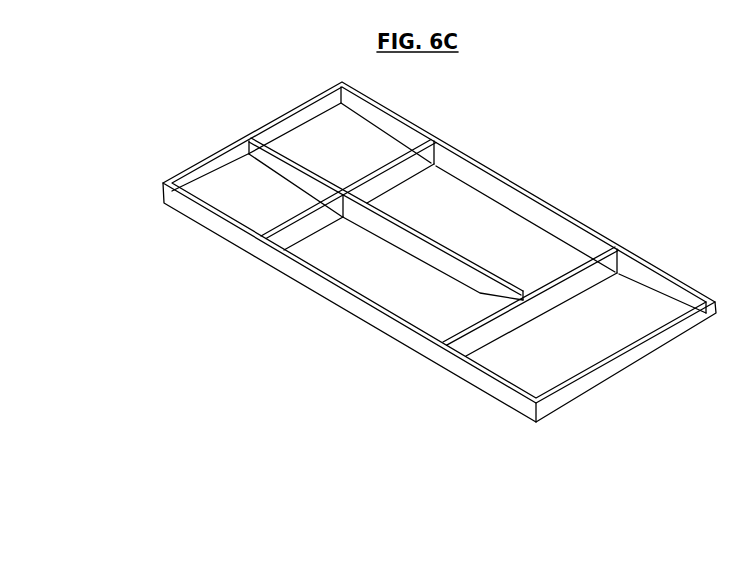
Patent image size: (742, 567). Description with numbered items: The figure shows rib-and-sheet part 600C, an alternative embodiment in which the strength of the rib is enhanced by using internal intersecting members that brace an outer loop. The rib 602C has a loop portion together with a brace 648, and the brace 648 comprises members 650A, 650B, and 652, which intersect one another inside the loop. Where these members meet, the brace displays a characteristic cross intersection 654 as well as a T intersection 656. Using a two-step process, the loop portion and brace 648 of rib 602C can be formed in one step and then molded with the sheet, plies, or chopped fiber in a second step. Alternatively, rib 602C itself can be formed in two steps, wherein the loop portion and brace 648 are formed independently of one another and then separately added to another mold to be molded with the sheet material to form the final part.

The rib-and-sheet part 600C is at (409, 251).
The rib 602C is at (292, 278).
The brace 648 is at (441, 220).
The member 650A is at (277, 224).
The member 650B is at (547, 303).
The member 652 is at (427, 250).
The cross intersection 654 is at (345, 190).
The T intersection 656 is at (525, 297).